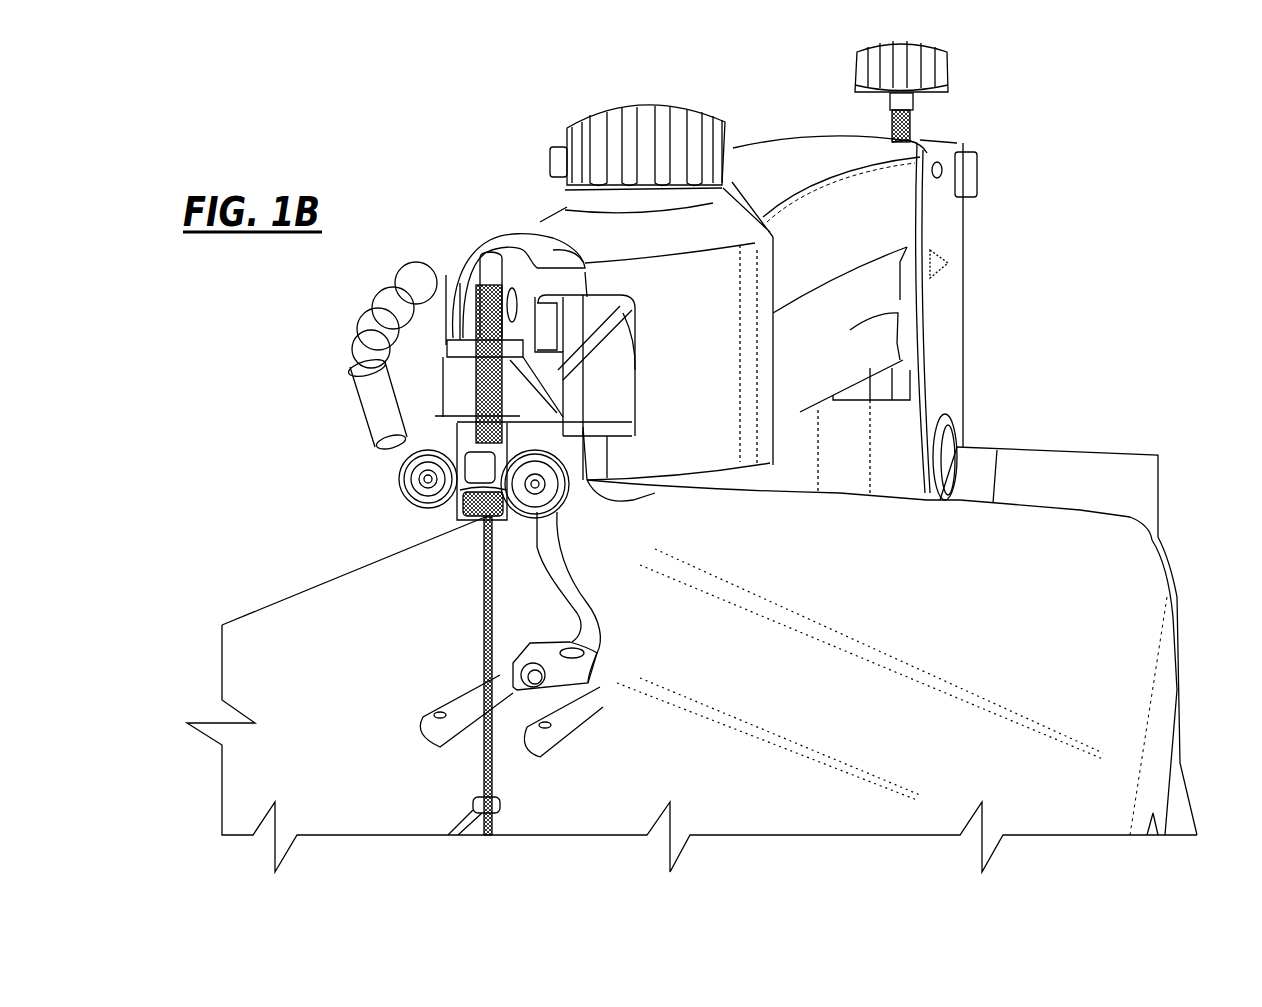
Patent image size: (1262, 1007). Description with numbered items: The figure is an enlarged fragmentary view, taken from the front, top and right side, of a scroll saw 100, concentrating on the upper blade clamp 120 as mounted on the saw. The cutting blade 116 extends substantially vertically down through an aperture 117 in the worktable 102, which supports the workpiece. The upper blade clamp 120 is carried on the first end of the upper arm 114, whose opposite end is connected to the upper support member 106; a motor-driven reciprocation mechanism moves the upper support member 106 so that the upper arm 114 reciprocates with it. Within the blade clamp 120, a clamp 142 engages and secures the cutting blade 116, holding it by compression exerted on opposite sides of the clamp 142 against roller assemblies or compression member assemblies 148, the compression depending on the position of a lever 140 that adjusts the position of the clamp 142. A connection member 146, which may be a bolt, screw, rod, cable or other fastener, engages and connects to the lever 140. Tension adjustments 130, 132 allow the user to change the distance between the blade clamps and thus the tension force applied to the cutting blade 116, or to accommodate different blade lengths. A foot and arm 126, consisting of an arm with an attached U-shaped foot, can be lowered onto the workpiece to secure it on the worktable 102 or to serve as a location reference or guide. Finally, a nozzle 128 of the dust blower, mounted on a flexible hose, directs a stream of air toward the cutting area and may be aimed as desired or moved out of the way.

The scroll saw 100 is at (1062, 191).
The worktable 102 is at (1140, 603).
The upper support member 106 is at (850, 330).
The upper arm 114 is at (605, 468).
The cutting blade 116 is at (487, 610).
The aperture 117 is at (498, 800).
The upper blade clamp 120 is at (440, 433).
The foot and arm 126 is at (583, 618).
The nozzle 128 is at (372, 393).
The tension adjustment 130 is at (608, 130).
The tension adjustment 132 is at (938, 70).
The lever 140 is at (503, 240).
The clamp 142 is at (480, 520).
The connection member 146 is at (545, 425).
The roller assemblies 148 is at (563, 487).